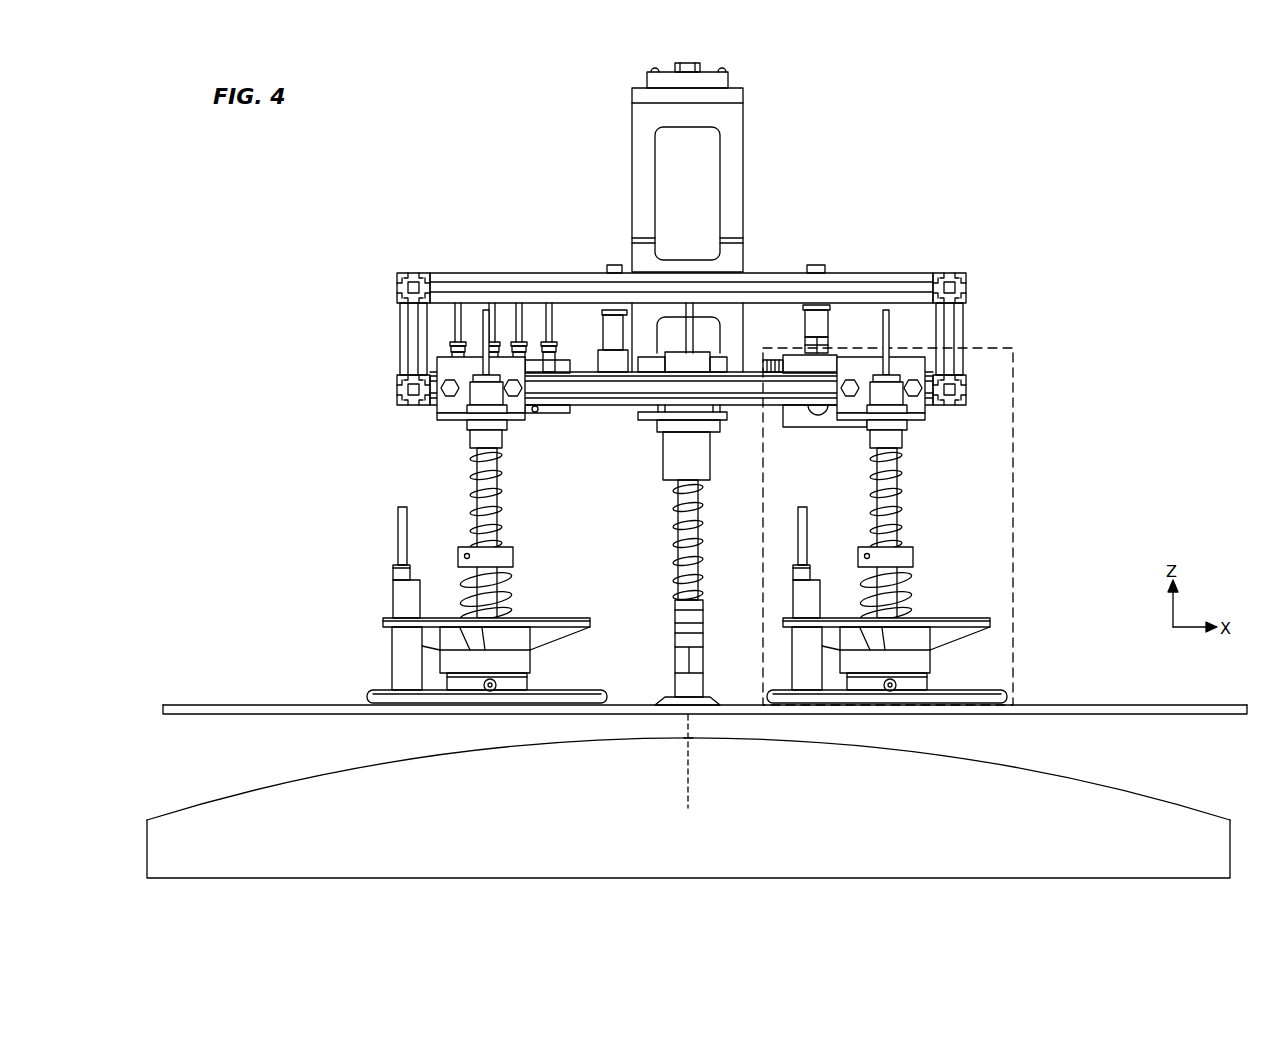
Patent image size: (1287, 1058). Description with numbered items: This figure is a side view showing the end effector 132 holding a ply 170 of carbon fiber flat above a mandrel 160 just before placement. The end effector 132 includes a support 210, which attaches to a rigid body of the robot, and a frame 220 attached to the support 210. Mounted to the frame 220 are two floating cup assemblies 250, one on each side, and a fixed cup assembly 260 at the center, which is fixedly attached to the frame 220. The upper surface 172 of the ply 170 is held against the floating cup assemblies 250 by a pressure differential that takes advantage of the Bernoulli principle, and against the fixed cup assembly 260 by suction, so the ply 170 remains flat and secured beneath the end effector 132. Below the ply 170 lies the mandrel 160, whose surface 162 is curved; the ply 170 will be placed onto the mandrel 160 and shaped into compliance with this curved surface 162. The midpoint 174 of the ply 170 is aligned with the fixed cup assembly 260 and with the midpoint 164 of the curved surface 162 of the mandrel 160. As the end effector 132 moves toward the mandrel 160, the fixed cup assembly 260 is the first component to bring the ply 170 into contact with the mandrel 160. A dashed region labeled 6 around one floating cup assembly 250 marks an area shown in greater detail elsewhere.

The end effector 132 is at (1008, 192).
The support 210 is at (745, 117).
The frame 220 is at (912, 272).
The detail region of FIG. 6 is at (1015, 445).
The floating cup assemblies 250 is at (344, 576).
The fixed cup assembly 260 is at (638, 545).
The ply 170 is at (206, 704).
The surface 172 is at (269, 694).
The mandrel 160 is at (234, 792).
The surface 162 is at (1056, 762).
The midpoint 174 is at (678, 724).
The midpoint 164 is at (698, 750).